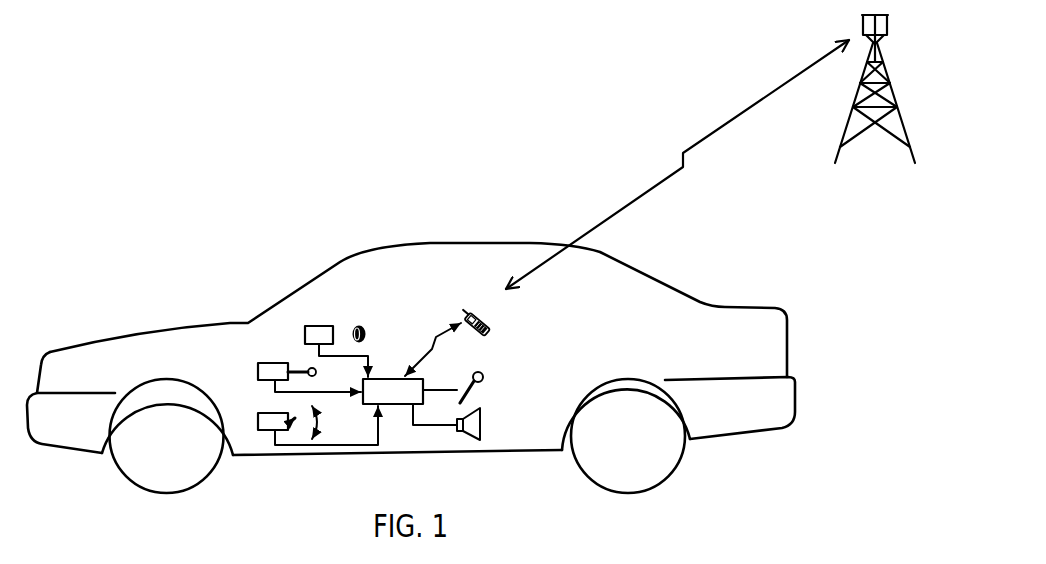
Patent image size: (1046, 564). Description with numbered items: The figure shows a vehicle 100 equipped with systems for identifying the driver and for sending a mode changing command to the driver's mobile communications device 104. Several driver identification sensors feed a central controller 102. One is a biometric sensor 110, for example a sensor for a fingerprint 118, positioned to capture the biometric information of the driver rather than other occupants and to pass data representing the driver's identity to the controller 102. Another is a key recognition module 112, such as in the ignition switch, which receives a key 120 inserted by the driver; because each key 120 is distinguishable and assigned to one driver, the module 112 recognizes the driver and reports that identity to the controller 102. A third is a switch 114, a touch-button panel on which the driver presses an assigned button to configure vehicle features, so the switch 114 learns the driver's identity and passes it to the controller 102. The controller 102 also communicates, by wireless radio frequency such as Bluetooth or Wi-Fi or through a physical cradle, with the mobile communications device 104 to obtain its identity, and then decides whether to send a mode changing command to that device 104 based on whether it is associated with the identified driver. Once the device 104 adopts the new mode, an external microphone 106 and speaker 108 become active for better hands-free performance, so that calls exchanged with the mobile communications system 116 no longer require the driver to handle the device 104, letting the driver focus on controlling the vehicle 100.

The vehicle 100 is at (425, 243).
The controller 102 is at (392, 378).
The mobile communications device 104 is at (494, 322).
The external microphone 106 is at (484, 377).
The speaker 108 is at (483, 428).
The biometric sensor 110 is at (320, 325).
The key recognition module 112 is at (274, 363).
The switch 114 is at (257, 418).
The mobile communications system 116 is at (841, 132).
The fingerprint sensor 118 is at (364, 328).
The key 120 is at (311, 367).